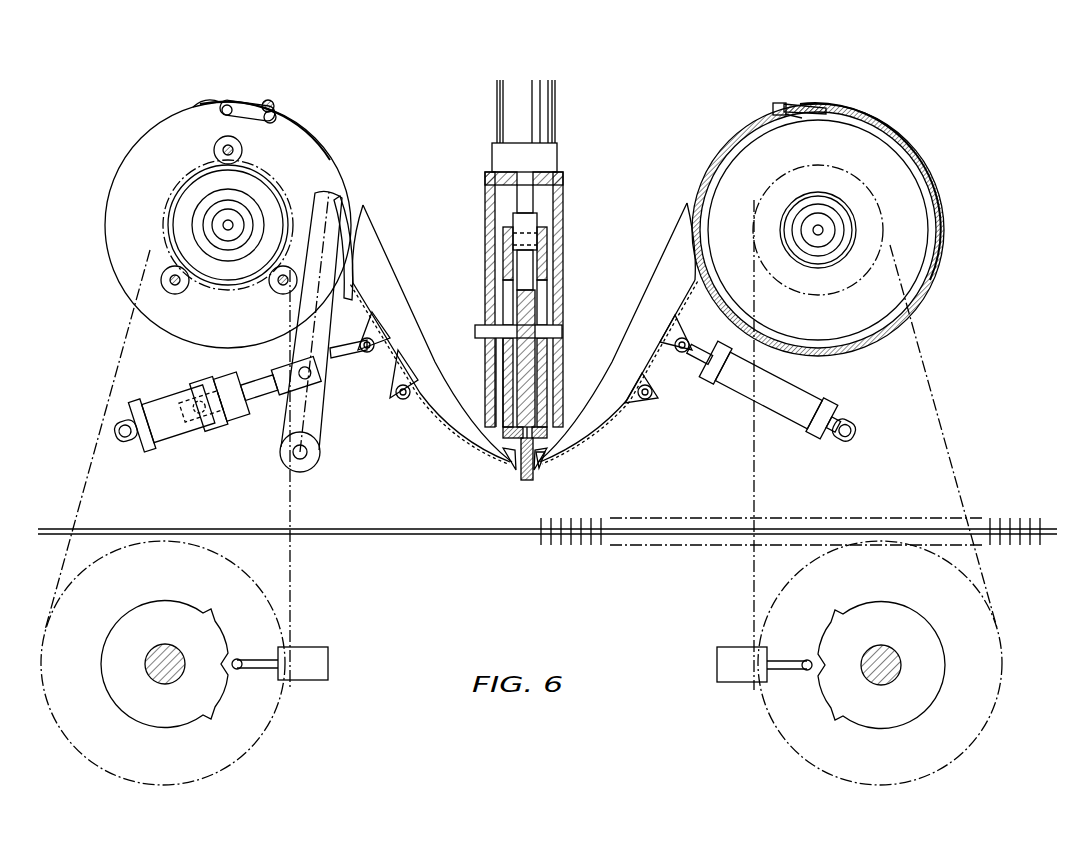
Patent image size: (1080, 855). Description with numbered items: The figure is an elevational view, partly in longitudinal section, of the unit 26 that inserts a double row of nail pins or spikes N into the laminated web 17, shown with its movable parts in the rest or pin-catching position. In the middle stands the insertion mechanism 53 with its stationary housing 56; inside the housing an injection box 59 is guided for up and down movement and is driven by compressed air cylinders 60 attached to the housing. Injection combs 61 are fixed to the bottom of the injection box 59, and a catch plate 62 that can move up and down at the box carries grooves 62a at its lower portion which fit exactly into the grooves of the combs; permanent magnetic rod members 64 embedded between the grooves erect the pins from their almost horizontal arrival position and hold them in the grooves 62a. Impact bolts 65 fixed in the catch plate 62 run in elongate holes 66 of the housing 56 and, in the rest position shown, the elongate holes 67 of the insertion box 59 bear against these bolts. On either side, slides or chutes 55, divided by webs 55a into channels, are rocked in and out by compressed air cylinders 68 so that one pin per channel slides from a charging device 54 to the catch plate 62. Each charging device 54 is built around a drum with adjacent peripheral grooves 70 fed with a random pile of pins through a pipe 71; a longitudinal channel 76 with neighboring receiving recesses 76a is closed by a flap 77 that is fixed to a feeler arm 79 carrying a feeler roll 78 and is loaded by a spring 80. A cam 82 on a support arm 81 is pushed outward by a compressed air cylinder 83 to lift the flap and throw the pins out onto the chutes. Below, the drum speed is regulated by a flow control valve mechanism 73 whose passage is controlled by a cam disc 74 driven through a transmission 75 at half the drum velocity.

The laminated web 17 is at (385, 528).
The unit 26 is at (132, 146).
The insertion mechanism 53 is at (570, 151).
The charging device 54 is at (303, 116).
The slide or chute 55 is at (426, 409).
The web 55a is at (377, 277).
The housing 56 is at (492, 203).
The injection box 59 is at (547, 260).
The compressed air cylinder 60 is at (535, 102).
The injection comb 61 is at (508, 447).
The catch plate 62 is at (527, 358).
The groove 62a is at (520, 413).
The permanent magnetic rod member 64 is at (543, 467).
The impact bolt 65 is at (482, 333).
The elongate hole 66 is at (492, 380).
The elongate hole 67 is at (540, 290).
The compressed air cylinder 68 is at (250, 417).
The peripheral groove 70 is at (747, 142).
The pipe or conduit 71 is at (175, 205).
The flow control valve mechanism 73 is at (318, 663).
The cam disc 74 is at (170, 615).
The transmission 75 is at (265, 590).
The longitudinal channel 76 is at (788, 116).
The receiving recess 76a is at (813, 106).
The closure flap 77 is at (773, 112).
The feeler roll 78 is at (268, 100).
The feeler arm 79 is at (236, 105).
The spring 80 is at (215, 100).
The support arm 81 is at (308, 422).
The cam 82 is at (343, 228).
The compressed air cylinder 83 is at (173, 413).
The nail pins or spikes N is at (520, 467).